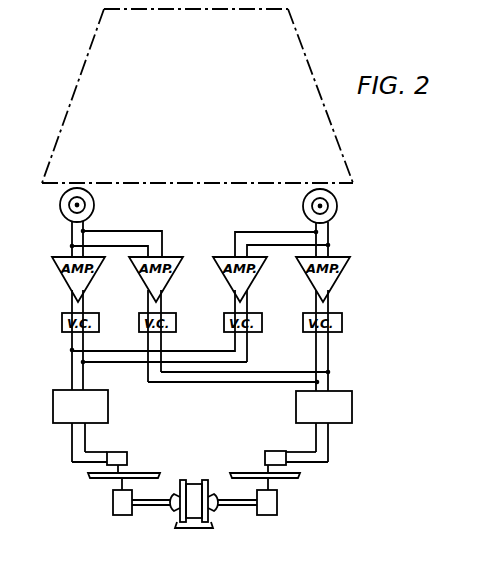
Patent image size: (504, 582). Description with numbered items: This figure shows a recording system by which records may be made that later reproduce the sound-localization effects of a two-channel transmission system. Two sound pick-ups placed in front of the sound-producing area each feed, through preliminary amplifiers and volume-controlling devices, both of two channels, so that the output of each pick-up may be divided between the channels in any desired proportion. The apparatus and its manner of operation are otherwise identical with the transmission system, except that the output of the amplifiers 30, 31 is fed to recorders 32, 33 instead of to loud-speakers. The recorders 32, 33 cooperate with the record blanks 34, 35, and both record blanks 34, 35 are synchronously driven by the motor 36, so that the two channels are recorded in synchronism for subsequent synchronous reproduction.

The amplifier 30 is at (53, 407).
The amplifier 31 is at (352, 407).
The recorder 32 is at (124, 450).
The recorder 33 is at (272, 450).
The record blank 34 is at (145, 471).
The record blank 35 is at (235, 471).
The motor 36 is at (193, 528).